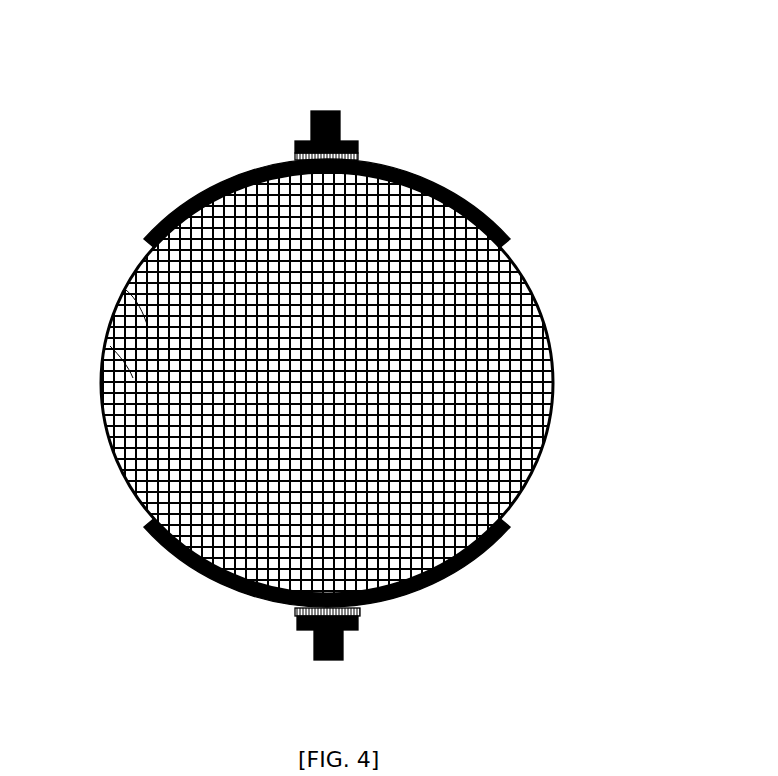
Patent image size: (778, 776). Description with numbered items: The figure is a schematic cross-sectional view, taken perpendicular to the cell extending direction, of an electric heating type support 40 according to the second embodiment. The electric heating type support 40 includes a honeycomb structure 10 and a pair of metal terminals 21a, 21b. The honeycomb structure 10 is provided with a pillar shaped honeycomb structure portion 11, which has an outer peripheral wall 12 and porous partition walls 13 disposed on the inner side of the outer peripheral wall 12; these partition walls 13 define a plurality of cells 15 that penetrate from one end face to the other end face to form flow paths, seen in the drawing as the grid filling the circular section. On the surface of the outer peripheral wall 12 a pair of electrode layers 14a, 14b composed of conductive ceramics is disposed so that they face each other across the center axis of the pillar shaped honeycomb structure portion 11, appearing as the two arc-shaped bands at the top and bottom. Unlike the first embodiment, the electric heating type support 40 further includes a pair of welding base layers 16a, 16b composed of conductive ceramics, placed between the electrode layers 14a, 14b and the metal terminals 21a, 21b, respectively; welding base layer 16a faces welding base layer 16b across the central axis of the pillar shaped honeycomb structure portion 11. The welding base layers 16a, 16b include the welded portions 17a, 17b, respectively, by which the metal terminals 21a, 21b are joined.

The electric heating type support 40 is at (262, 96).
The honeycomb structure 10 is at (494, 211).
The pillar shaped honeycomb structure portion 11 is at (532, 287).
The outer peripheral wall 12 is at (527, 462).
The porous partition walls 13 is at (102, 338).
The cells 15 is at (118, 282).
The electrode layer 14a is at (177, 195).
The electrode layer 14b is at (182, 563).
The welding base layer 16a is at (353, 147).
The welding base layer 16b is at (353, 603).
The welded portion 17a is at (319, 137).
The welded portion 17b is at (322, 614).
The metal terminal 21a is at (333, 128).
The metal terminal 21b is at (337, 628).